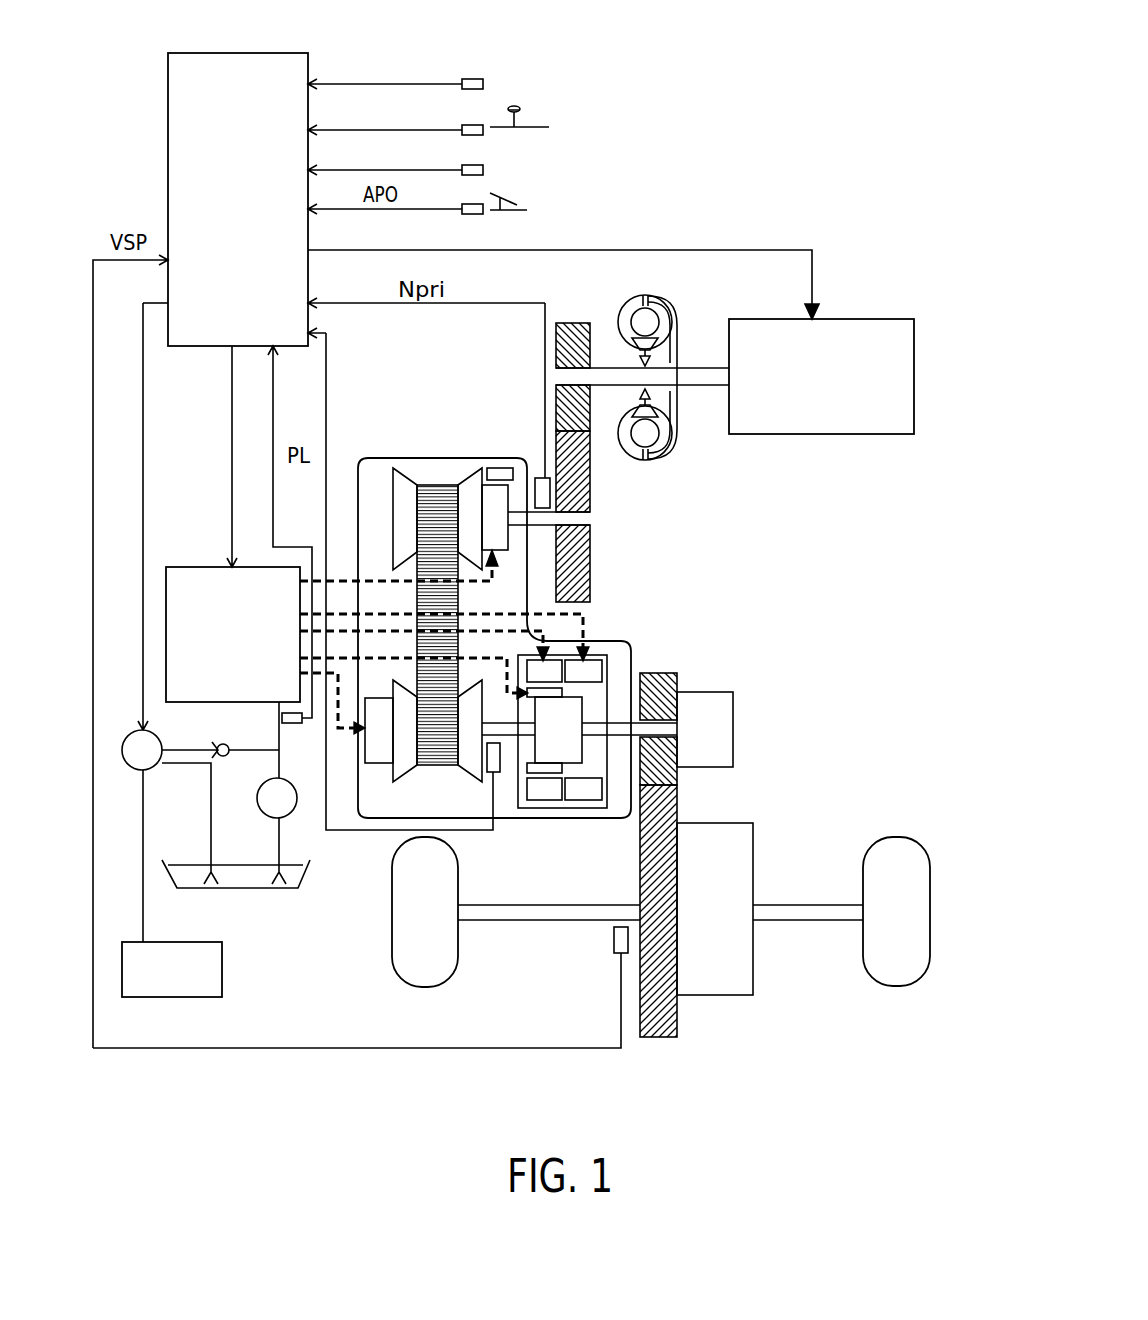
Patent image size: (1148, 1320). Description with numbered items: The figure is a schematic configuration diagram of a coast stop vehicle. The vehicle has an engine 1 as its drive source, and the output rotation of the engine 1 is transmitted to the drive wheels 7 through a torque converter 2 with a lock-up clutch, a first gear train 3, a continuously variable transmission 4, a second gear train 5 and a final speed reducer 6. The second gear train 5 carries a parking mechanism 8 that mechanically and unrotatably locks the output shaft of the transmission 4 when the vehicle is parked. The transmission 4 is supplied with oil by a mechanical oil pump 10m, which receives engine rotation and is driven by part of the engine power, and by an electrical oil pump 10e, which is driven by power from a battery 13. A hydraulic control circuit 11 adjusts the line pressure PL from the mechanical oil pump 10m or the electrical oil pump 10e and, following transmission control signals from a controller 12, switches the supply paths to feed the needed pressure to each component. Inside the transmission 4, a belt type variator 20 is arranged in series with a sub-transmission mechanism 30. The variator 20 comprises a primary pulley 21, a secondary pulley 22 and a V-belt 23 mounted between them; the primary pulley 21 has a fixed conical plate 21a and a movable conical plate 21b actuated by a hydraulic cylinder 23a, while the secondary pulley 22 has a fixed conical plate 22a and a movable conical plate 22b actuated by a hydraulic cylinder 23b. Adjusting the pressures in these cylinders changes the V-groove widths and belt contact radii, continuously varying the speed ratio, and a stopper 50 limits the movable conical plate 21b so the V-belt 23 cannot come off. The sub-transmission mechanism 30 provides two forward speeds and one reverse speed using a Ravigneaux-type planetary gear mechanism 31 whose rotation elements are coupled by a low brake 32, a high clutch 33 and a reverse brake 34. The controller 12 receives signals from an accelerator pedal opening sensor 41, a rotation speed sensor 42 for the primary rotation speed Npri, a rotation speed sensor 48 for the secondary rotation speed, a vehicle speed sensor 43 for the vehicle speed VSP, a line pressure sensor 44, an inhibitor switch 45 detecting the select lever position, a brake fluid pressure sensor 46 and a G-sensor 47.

The engine 1 is at (888, 333).
The torque converter 2 is at (665, 330).
The first gear train 3 is at (571, 308).
The transmission 4 is at (518, 456).
The second gear train 5 is at (665, 1057).
The final speed reducer 6 is at (713, 982).
The drive wheels 7 is at (425, 972).
The parking mechanism 8 is at (717, 720).
The electrical oil pump 10e is at (148, 767).
The mechanical oil pump 10m is at (270, 812).
The hydraulic control circuit 11 is at (186, 572).
The controller 12 is at (293, 63).
The battery 13 is at (218, 985).
The variator 20 is at (378, 480).
The primary pulley 21 is at (419, 472).
The fixed conical plate 21a is at (404, 482).
The movable conical plate 21b is at (468, 488).
The secondary pulley 22 is at (442, 784).
The fixed conical plate 22a is at (469, 762).
The movable conical plate 22b is at (405, 762).
The V-belt 23 is at (438, 485).
The hydraulic cylinder 23a is at (490, 512).
The hydraulic cylinder 23b is at (377, 752).
The sub-transmission mechanism 30 is at (614, 704).
The Ravigneaux-type planetary gear mechanism 31 is at (563, 727).
The low brake 32 is at (547, 672).
The high clutch 33 is at (545, 770).
The reverse brake 34 is at (583, 672).
The accelerator pedal opening sensor 41 is at (480, 212).
The rotation speed sensor 42 is at (540, 477).
The vehicle speed sensor 43 is at (618, 940).
The line pressure sensor 44 is at (293, 724).
The inhibitor switch 45 is at (477, 128).
The brake fluid pressure sensor 46 is at (470, 173).
The G-sensor 47 is at (477, 81).
The rotation speed sensor 48 is at (493, 762).
The stopper 50 is at (500, 474).